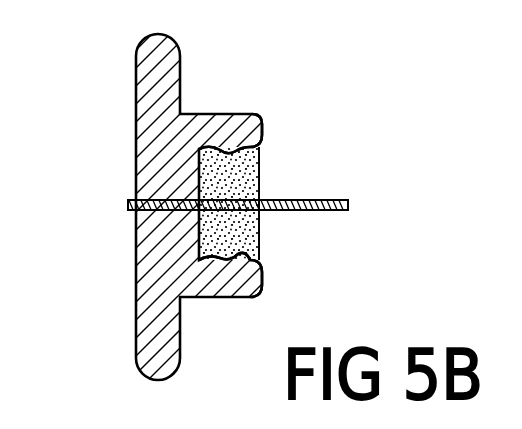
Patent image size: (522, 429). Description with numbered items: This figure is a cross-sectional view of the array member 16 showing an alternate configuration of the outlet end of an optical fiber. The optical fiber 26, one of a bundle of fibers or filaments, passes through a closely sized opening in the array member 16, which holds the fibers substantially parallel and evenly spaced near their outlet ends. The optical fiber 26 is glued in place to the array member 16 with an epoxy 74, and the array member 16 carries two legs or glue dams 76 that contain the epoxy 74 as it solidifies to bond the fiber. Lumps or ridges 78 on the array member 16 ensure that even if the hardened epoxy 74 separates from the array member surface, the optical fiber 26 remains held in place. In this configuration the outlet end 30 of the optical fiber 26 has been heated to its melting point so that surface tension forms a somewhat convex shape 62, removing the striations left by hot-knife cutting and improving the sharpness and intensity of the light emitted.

The array member 16 is at (137, 77).
The optical fiber 26 is at (340, 200).
The outlet end 30 is at (134, 212).
The convex shape 62 is at (134, 203).
The epoxy 74 is at (258, 180).
The glue dams 76 is at (262, 118).
The lumps or ridges 78 is at (255, 148).